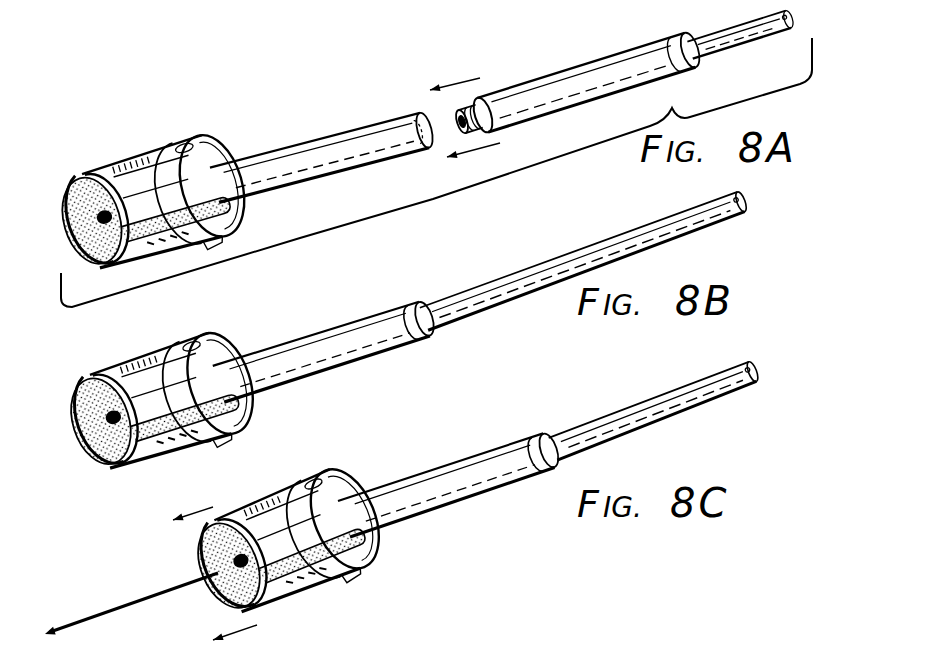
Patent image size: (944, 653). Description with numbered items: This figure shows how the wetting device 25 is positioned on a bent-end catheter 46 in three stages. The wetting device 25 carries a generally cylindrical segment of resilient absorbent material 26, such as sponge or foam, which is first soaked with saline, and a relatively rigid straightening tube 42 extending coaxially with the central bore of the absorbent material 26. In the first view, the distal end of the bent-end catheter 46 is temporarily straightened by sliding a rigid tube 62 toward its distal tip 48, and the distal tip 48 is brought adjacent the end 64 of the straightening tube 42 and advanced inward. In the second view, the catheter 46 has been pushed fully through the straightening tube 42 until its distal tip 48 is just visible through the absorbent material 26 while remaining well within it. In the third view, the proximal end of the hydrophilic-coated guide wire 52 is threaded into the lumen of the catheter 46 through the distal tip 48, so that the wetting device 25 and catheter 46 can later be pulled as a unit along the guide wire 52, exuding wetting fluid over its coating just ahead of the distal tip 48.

In FIG. 8A, the wetting device 25 is at (233, 142).
In FIG. 8B, the wetting device 25 is at (240, 348).
In FIG. 8C, the wetting device 25 is at (363, 470).
In FIG. 8A, the absorbent material 26 is at (60, 175).
In FIG. 8B, the absorbent material 26 is at (90, 453).
In FIG. 8C, the absorbent material 26 is at (213, 597).
In FIG. 8C, the straightening tube 42 is at (490, 453).
In FIG. 8A, the catheter 46 is at (705, 30).
In FIG. 8B, the catheter 46 is at (546, 267).
In FIG. 8C, the catheter 46 is at (610, 418).
In FIG. 8A, the distal tip 48 is at (462, 117).
In FIG. 8B, the distal tip 48 is at (72, 407).
In FIG. 8C, the distal tip 48 is at (203, 555).
In FIG. 8C, the guide wire 52 is at (121, 614).
In FIG. 8A, the rigid tube 62 is at (595, 60).
In FIG. 8A, the end of straightening tube 64 is at (428, 150).